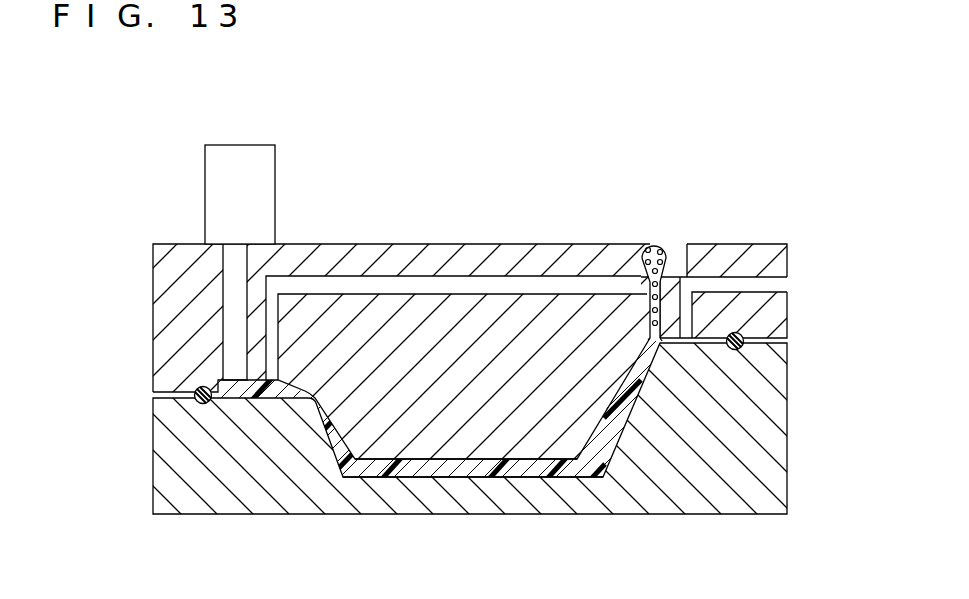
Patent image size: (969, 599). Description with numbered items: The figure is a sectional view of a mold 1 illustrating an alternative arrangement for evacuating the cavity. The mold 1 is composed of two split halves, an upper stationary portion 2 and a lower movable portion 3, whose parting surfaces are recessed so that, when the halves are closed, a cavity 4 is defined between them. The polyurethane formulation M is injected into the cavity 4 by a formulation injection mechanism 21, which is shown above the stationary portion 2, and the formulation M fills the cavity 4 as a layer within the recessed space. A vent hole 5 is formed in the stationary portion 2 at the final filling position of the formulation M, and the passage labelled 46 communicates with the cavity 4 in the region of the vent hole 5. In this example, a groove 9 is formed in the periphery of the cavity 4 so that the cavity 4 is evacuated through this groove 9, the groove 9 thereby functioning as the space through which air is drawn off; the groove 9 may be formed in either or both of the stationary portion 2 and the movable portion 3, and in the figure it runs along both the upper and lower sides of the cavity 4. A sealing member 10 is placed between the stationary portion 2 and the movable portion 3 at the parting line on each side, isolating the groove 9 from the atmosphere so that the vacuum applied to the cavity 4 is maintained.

The mold 1 is at (419, 379).
The stationary portion 2 is at (155, 320).
The movable portion 3 is at (437, 428).
The cavity 4 is at (426, 465).
The vent hole 5 is at (628, 287).
The groove 9 is at (283, 304).
The sealing member 10 is at (746, 347).
The formulation injection mechanism 21 is at (296, 159).
The sprue with foamed resin 46 is at (651, 243).
The polyurethane formulation M is at (535, 466).